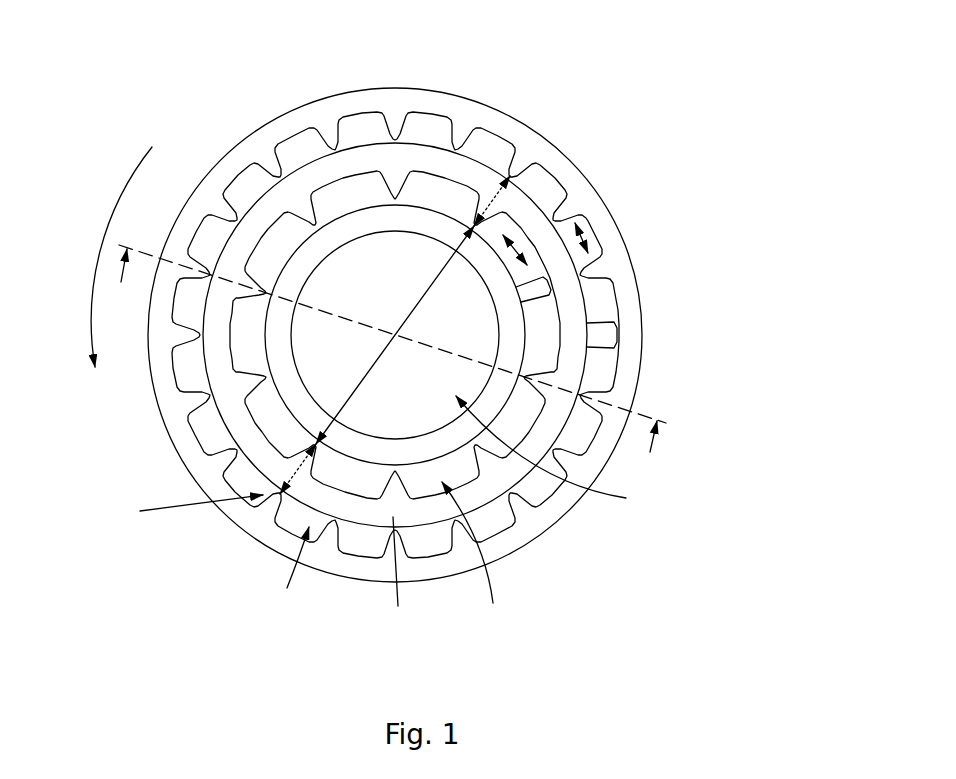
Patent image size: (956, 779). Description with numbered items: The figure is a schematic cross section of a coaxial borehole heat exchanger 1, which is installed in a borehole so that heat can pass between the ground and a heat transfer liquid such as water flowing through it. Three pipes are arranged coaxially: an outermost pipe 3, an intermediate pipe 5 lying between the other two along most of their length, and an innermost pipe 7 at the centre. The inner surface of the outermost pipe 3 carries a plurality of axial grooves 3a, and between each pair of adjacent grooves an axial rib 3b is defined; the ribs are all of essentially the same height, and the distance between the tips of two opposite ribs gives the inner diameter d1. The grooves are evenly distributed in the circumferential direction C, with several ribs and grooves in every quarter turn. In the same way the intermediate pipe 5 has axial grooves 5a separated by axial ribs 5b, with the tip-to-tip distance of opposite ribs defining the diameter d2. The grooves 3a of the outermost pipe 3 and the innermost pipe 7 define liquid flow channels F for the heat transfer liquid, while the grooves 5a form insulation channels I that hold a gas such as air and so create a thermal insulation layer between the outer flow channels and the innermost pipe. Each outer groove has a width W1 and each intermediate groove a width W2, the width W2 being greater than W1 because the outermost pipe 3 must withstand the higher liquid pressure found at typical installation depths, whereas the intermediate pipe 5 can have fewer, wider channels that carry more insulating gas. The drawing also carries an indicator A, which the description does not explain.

The coaxial borehole heat exchanger 1 is at (622, 68).
The outermost pipe 3 is at (393, 351).
The axial grooves 3a is at (249, 488).
The axial ribs 3b is at (514, 179).
The intermediate pipe 5 is at (404, 336).
The axial grooves 5a is at (459, 488).
The axial ribs 5b is at (475, 224).
The innermost pipe 7 is at (510, 300).
The inner diameter of the outermost pipe d1 is at (509, 176).
The inner diameter defined by the intermediate pipe ribs d2 is at (435, 280).
The width of axial groove of the outermost pipe W1 is at (585, 216).
The width of axial groove of the intermediate pipe W2 is at (540, 286).
The liquid flow channel F is at (384, 500).
The insulation channels I is at (445, 557).
The section line A- A is at (387, 361).
The circumferential direction C is at (111, 257).